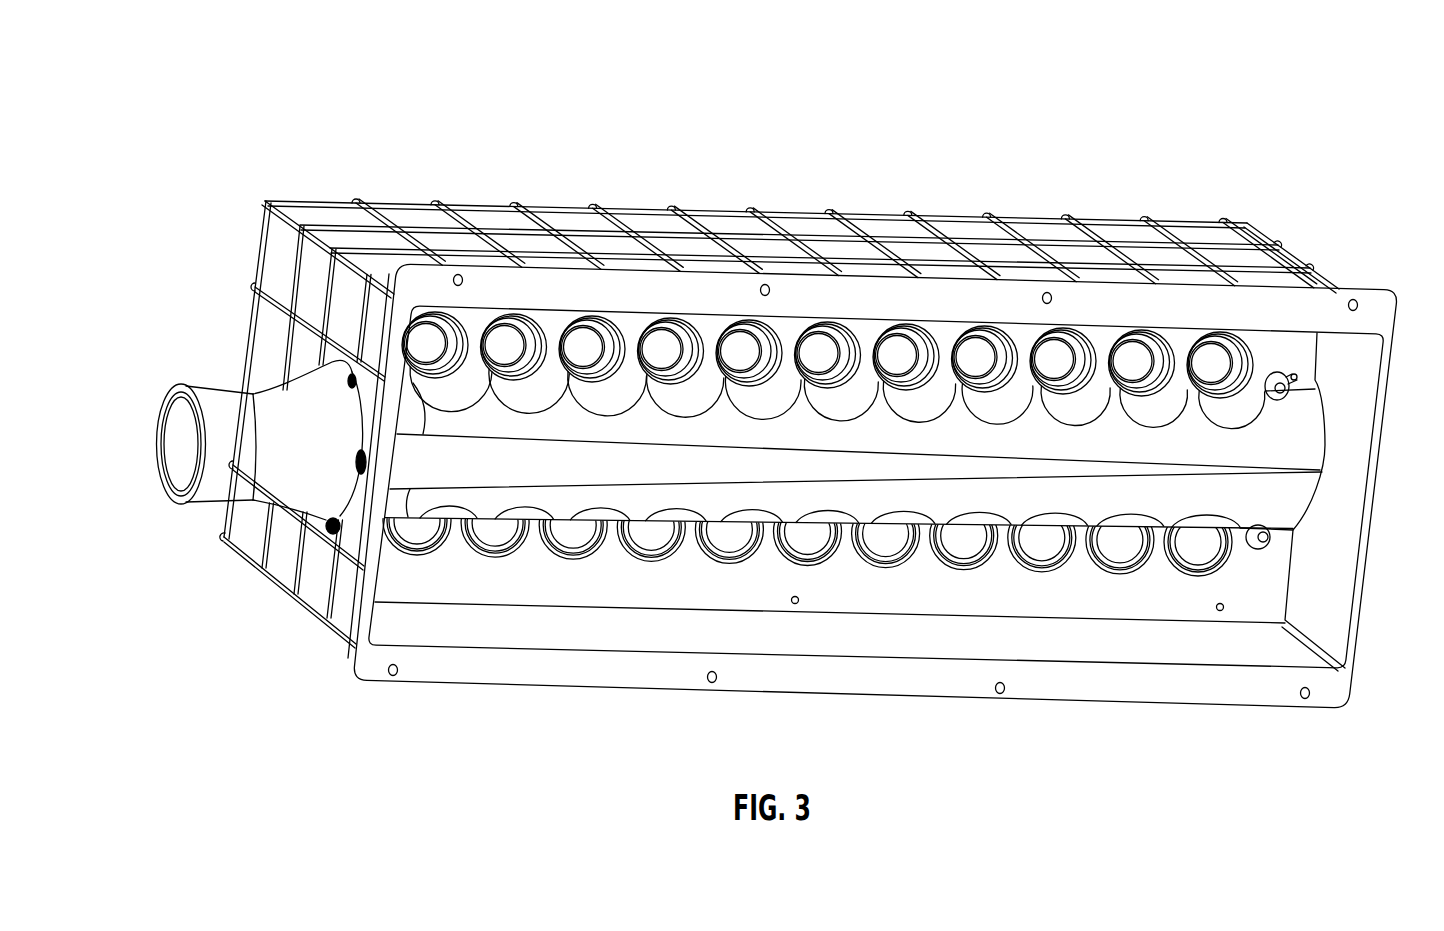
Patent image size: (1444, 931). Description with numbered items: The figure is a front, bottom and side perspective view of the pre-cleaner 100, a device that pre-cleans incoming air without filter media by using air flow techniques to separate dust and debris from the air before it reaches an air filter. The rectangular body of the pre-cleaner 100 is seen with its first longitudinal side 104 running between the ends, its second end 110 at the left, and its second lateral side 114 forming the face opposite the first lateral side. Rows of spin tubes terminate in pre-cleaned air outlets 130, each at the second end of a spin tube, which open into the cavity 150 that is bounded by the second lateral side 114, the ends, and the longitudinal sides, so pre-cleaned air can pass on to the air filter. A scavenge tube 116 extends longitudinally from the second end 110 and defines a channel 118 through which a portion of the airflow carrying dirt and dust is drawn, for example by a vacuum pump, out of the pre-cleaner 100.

The pre-cleaner 100 is at (181, 81).
The first longitudinal side 104 is at (717, 227).
The second end 110 is at (280, 272).
The second lateral side 114 is at (1378, 298).
The scavenge tube 116 is at (217, 388).
The channel 118 is at (181, 458).
The pre-cleaned air outlet 130 is at (510, 350).
The cavity 150 is at (594, 617).